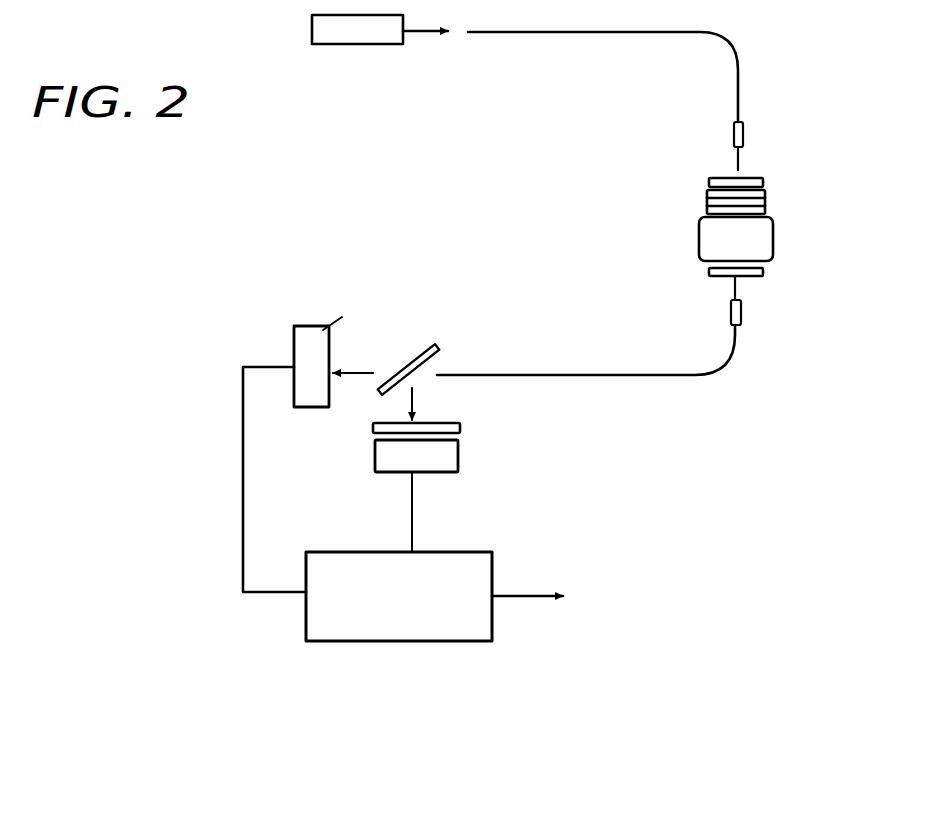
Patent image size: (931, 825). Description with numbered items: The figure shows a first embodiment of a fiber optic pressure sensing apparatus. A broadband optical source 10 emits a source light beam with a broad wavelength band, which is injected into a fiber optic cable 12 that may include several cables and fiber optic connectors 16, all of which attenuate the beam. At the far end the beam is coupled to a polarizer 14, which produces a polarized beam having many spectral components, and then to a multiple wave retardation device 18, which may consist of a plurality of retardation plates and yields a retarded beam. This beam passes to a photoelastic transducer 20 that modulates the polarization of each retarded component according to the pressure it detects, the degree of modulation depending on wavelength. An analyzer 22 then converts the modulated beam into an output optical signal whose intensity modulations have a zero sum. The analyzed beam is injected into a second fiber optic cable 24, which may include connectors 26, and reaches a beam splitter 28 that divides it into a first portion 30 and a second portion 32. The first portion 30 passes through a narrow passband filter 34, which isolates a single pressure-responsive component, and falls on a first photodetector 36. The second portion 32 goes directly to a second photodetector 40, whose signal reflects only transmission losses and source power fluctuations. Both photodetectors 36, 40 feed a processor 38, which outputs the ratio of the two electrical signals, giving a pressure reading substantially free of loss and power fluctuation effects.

The broadband optical source 10 is at (312, 38).
The fiber optic cable 12 is at (617, 32).
The polarizer 14 is at (763, 180).
The fiber optic connectors 16 is at (744, 135).
The multiple wave retardation device 18 is at (768, 194).
The photoelastic transducer 20 is at (760, 236).
The analyzer 22 is at (765, 272).
The fiber optic cable 24 is at (710, 364).
The connectors 26 is at (742, 313).
The beam splitter 28 is at (437, 350).
The first portion 30 is at (413, 403).
The second portion 32 is at (363, 370).
The narrow passband filter 34 is at (462, 430).
The first photodetector 36 is at (458, 457).
The processor 38 is at (492, 559).
The second photodetector 40 is at (302, 341).